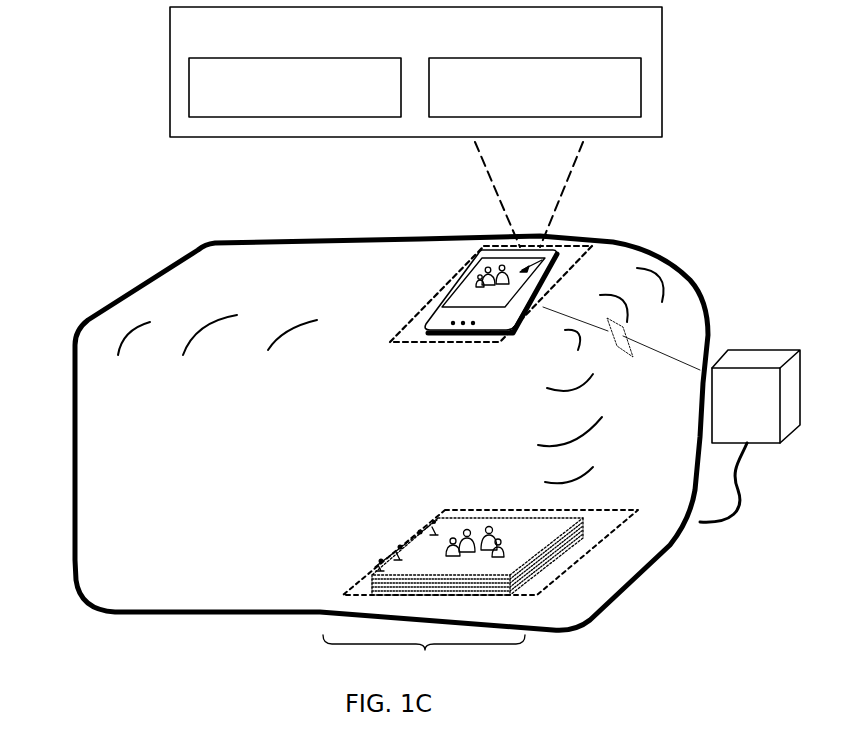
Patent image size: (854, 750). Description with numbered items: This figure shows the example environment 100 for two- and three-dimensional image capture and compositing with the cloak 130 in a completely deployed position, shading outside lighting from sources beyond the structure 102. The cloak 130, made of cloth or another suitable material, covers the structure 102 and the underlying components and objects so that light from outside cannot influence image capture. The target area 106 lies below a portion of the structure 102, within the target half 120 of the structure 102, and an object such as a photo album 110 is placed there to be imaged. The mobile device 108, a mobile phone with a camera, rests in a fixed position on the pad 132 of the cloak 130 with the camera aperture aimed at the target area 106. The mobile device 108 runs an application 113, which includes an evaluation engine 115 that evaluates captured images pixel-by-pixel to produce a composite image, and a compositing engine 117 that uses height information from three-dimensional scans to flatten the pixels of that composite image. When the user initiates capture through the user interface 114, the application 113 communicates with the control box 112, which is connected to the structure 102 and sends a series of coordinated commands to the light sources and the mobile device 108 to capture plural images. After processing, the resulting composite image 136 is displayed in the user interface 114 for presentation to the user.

The environment 100 is at (73, 175).
The structure 102 is at (95, 607).
The target area 106 is at (489, 510).
The mobile device 108 is at (397, 291).
The photo album 110 is at (405, 541).
The control box 112 is at (671, 414).
The application 113 is at (416, 72).
The user interface 114 is at (457, 283).
The evaluation engine 115 is at (295, 87).
The compositing engine 117 is at (535, 87).
The target half 120 is at (424, 655).
The cloak 130 is at (305, 240).
The pad 132 is at (481, 245).
The composite image 136 is at (577, 247).